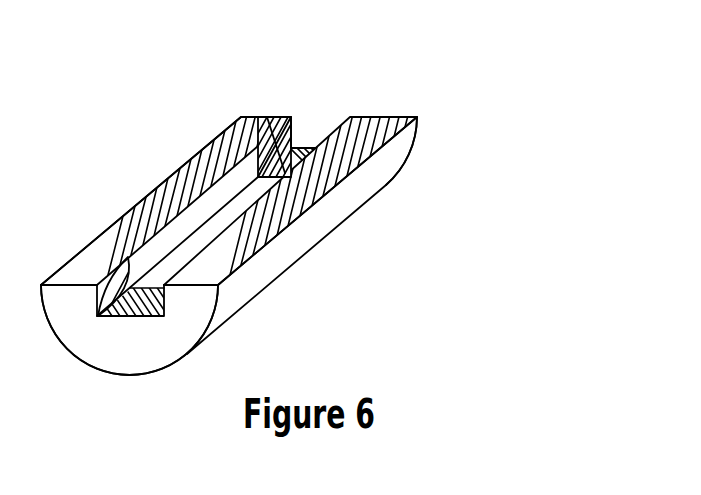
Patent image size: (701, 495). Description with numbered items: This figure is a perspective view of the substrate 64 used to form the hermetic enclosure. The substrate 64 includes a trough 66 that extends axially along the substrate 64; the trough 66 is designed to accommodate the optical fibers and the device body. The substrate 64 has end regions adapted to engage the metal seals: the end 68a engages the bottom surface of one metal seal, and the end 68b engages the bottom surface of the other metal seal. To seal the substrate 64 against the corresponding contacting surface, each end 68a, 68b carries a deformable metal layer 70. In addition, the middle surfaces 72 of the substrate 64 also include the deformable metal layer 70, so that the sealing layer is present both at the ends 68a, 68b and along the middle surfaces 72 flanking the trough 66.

The substrate 64 is at (418, 82).
The trough 66 is at (178, 228).
The end 68a is at (121, 336).
The end 68b is at (312, 134).
The deformable metal layer 70 is at (267, 117).
The middle surfaces 72 is at (102, 220).